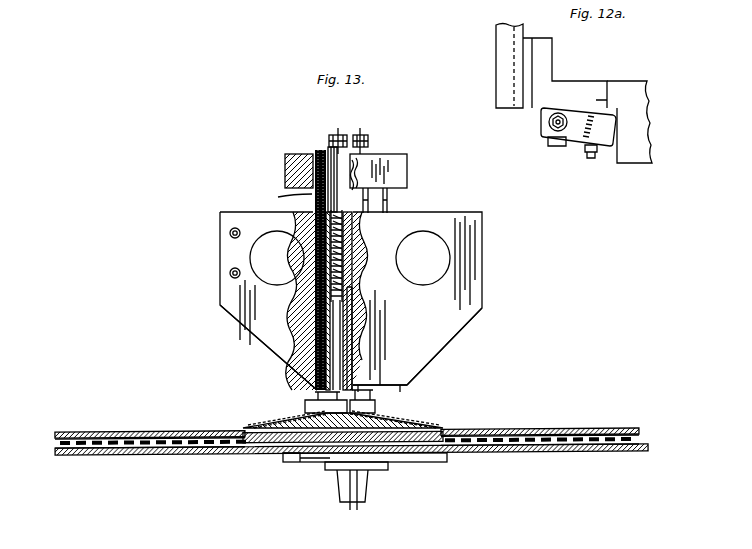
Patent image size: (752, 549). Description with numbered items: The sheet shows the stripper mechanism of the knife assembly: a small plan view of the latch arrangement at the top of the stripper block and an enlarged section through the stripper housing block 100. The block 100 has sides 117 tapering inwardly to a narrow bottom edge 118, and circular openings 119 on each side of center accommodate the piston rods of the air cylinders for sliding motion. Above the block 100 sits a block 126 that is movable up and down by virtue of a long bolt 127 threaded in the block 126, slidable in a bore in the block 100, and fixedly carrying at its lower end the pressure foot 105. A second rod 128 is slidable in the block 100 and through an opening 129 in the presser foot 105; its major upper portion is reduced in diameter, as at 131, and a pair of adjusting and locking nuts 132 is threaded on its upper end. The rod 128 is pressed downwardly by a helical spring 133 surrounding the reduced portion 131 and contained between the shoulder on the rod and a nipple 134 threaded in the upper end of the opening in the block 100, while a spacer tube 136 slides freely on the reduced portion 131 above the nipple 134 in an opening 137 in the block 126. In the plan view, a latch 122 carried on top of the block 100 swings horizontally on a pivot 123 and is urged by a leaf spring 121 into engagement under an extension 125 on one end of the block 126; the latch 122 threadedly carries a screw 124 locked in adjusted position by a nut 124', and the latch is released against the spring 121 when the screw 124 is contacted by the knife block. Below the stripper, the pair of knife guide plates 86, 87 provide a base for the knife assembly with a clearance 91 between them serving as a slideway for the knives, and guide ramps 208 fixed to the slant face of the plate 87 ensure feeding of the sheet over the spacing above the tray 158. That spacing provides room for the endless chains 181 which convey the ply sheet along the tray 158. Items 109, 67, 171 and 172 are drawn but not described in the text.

In FIG. 13, the stripper housing block 100 is at (429, 210).
In FIG. 13, the sides 117 is at (250, 343).
In FIG. 13, the circular openings 119 is at (258, 248).
In FIG. 13, the helical spring 133 is at (348, 237).
In FIG. 13, the second rod 128 is at (340, 332).
In FIG. 13, the rod 109 is at (358, 317).
In FIG. 13, the opening 129 is at (368, 361).
In FIG. 13, the bottom edge 118 is at (371, 382).
In FIG. 13, the block 126 is at (300, 154).
In FIG. 12A, the block 126 is at (638, 94).
In FIG. 13, the long bolt 127 is at (282, 192).
In FIG. 13, the adjusting and locking nuts 132 is at (339, 142).
In FIG. 13, the opening 137 is at (352, 160).
In FIG. 13, the reduced portion 131 is at (355, 185).
In FIG. 13, the spacer tube 136 is at (395, 152).
In FIG. 13, the nipple 134 is at (370, 200).
In FIG. 13, the endless chains 181 is at (192, 454).
In FIG. 13, the chain 67 is at (565, 426).
In FIG. 13, the guide ramps 208 is at (228, 454).
In FIG. 12A, the guide ramps 208 is at (497, 97).
In FIG. 13, the tray 158 is at (602, 447).
In FIG. 13, the plate 86 is at (276, 412).
In FIG. 13, the plate 87 is at (415, 418).
In FIG. 13, the pressure foot 105 is at (302, 400).
In FIG. 13, the clearance 91 is at (320, 462).
In FIG. 13, the block 171 is at (392, 470).
In FIG. 13, the stem 172 is at (368, 496).
In FIG. 12A, the extension 125 is at (606, 96).
In FIG. 12A, the latch 122 is at (584, 136).
In FIG. 12A, the pivot 123 is at (549, 124).
In FIG. 12A, the leaf spring 121 is at (551, 146).
In FIG. 12A, the screw 124 is at (585, 95).
In FIG. 12A, the nut 124' is at (606, 161).